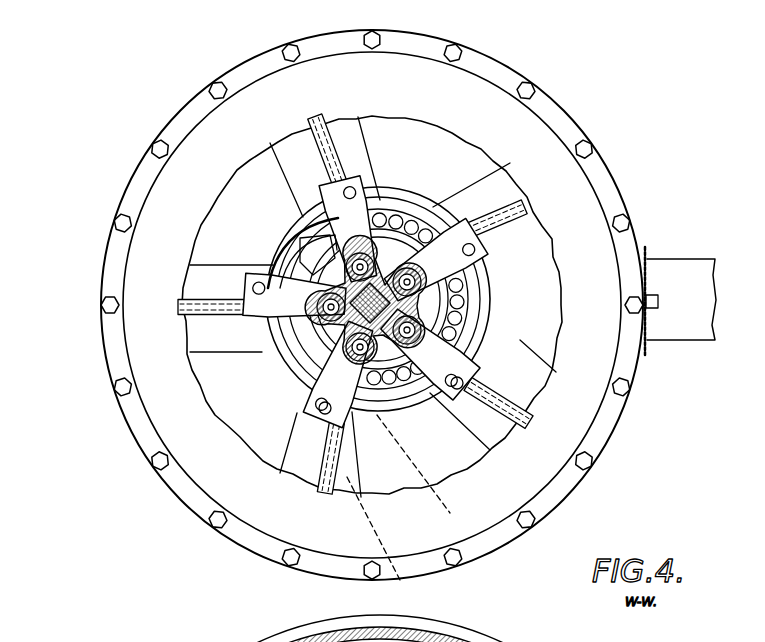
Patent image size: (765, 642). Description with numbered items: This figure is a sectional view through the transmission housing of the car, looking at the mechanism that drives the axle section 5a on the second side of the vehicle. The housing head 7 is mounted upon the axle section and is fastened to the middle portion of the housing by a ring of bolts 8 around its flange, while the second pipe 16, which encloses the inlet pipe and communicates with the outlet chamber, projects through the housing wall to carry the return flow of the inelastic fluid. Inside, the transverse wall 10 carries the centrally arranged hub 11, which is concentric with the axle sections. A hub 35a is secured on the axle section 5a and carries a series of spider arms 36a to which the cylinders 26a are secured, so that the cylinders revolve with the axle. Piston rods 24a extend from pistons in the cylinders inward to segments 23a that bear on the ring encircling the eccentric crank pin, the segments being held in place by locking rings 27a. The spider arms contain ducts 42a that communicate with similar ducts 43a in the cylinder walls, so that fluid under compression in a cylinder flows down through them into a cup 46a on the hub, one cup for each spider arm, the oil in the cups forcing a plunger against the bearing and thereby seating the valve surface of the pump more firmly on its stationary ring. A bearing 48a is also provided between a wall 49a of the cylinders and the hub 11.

The bolts 8 is at (468, 64).
The head 7 is at (563, 212).
The second pipe 16 is at (667, 272).
The cylinders 26a is at (297, 152).
The axle section 5a is at (486, 333).
The segments 23a is at (313, 252).
The transverse wall 10 is at (230, 233).
The hub 11 is at (540, 356).
The locking rings 27a is at (290, 328).
The wall of the cylinders 49a is at (300, 385).
The bearing 48a is at (490, 288).
The piston rods 24a is at (320, 232).
The spider arms 36a is at (333, 215).
The cup 46a is at (318, 392).
The hub 35a is at (270, 284).
The ducts 43a is at (367, 413).
The ducts 42a is at (450, 513).